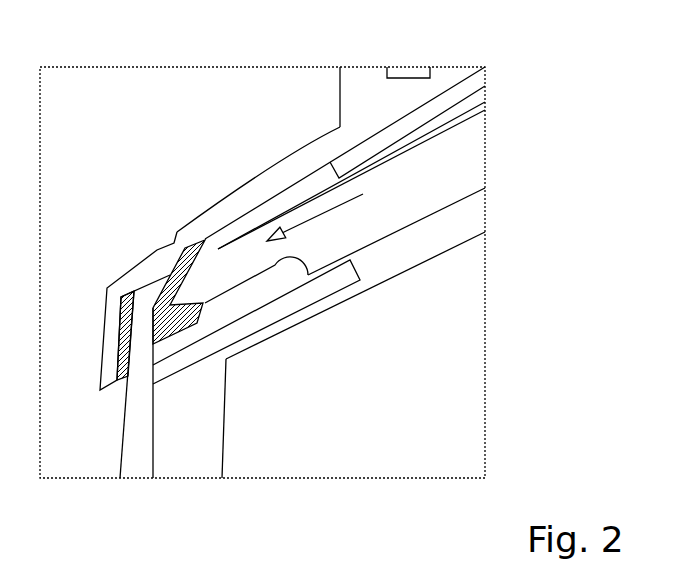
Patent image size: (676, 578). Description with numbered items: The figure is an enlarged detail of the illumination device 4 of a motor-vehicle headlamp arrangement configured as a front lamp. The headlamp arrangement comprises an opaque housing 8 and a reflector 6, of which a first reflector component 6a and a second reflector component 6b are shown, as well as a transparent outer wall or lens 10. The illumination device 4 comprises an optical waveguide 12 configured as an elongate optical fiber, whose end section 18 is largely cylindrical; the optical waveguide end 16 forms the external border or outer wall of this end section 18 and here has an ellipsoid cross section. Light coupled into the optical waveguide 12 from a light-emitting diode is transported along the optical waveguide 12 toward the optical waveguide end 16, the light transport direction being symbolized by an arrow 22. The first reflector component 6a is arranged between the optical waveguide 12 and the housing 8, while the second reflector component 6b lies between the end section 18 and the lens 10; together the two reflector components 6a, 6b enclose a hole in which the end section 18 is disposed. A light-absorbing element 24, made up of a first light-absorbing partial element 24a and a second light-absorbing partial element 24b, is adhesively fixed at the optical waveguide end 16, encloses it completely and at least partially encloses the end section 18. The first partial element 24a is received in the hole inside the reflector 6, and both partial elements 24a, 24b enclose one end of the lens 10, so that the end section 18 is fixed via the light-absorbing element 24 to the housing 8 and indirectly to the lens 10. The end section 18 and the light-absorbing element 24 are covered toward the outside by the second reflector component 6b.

The illumination device 4 is at (376, 438).
The reflector 6 is at (344, 320).
The first reflector component 6a is at (400, 122).
The second reflector component 6b is at (275, 320).
The housing 8 is at (340, 102).
The lens 10 is at (123, 429).
The optical waveguide 12 is at (385, 192).
The optical waveguide end 16 is at (176, 297).
The end section 18 is at (212, 302).
The arrow 22 is at (312, 219).
The light-absorbing element 24 is at (158, 243).
The first light-absorbing partial element 24a is at (181, 333).
The second light-absorbing partial element 24b is at (130, 298).